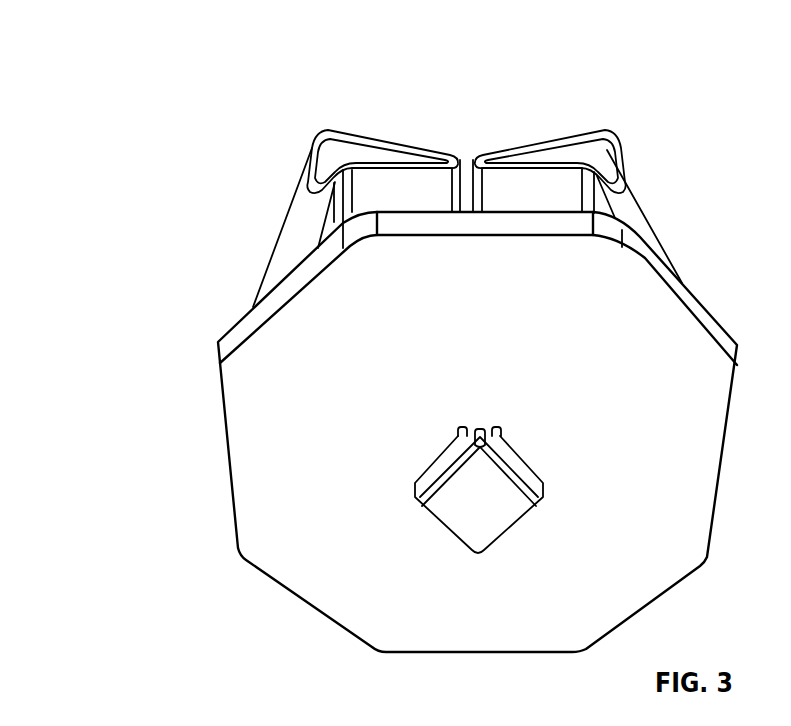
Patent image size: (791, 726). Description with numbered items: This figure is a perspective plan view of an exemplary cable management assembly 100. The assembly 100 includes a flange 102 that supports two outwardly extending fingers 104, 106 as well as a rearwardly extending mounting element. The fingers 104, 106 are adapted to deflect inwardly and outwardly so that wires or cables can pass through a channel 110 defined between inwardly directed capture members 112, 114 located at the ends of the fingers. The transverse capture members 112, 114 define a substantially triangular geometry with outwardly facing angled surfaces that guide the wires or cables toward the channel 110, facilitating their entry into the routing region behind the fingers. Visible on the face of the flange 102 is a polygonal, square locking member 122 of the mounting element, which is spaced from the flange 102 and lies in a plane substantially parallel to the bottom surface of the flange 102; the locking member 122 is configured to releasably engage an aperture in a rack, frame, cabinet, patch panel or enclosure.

The cable management assembly 100 is at (128, 115).
The flange 102 is at (497, 320).
The finger 104 is at (297, 222).
The finger 106 is at (642, 217).
The channel 110 is at (470, 148).
The capture member 112 is at (352, 155).
The capture member 114 is at (602, 155).
The polygonal locking member 122 is at (465, 528).